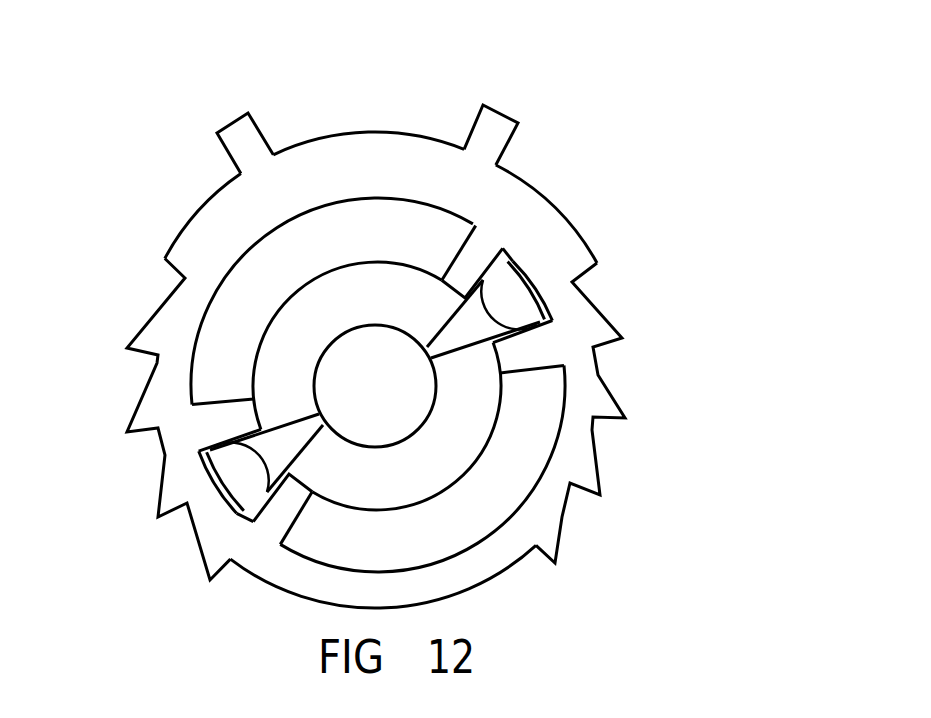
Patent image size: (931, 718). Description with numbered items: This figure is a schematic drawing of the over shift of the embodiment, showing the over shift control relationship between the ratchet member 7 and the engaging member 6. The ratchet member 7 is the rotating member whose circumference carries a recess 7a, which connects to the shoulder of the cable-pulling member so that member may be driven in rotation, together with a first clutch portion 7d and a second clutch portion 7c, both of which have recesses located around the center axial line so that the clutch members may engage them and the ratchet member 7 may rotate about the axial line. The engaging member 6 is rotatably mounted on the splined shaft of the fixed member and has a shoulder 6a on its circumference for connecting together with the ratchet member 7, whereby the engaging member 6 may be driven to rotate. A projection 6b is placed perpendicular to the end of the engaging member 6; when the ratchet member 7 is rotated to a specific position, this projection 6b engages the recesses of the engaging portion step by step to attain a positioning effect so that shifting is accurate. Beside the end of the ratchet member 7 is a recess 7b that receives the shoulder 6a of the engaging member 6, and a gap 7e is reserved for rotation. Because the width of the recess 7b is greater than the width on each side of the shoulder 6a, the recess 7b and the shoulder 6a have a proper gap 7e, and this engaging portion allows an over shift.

The engaging member 6 is at (423, 307).
The shoulder 6a is at (547, 340).
The projection 6b is at (496, 272).
The ratchet member 7 is at (422, 158).
The recess 7a is at (270, 154).
The recess 7b is at (547, 317).
The second clutch portion 7c is at (597, 405).
The first clutch portion 7d is at (143, 340).
The gap 7e is at (523, 332).